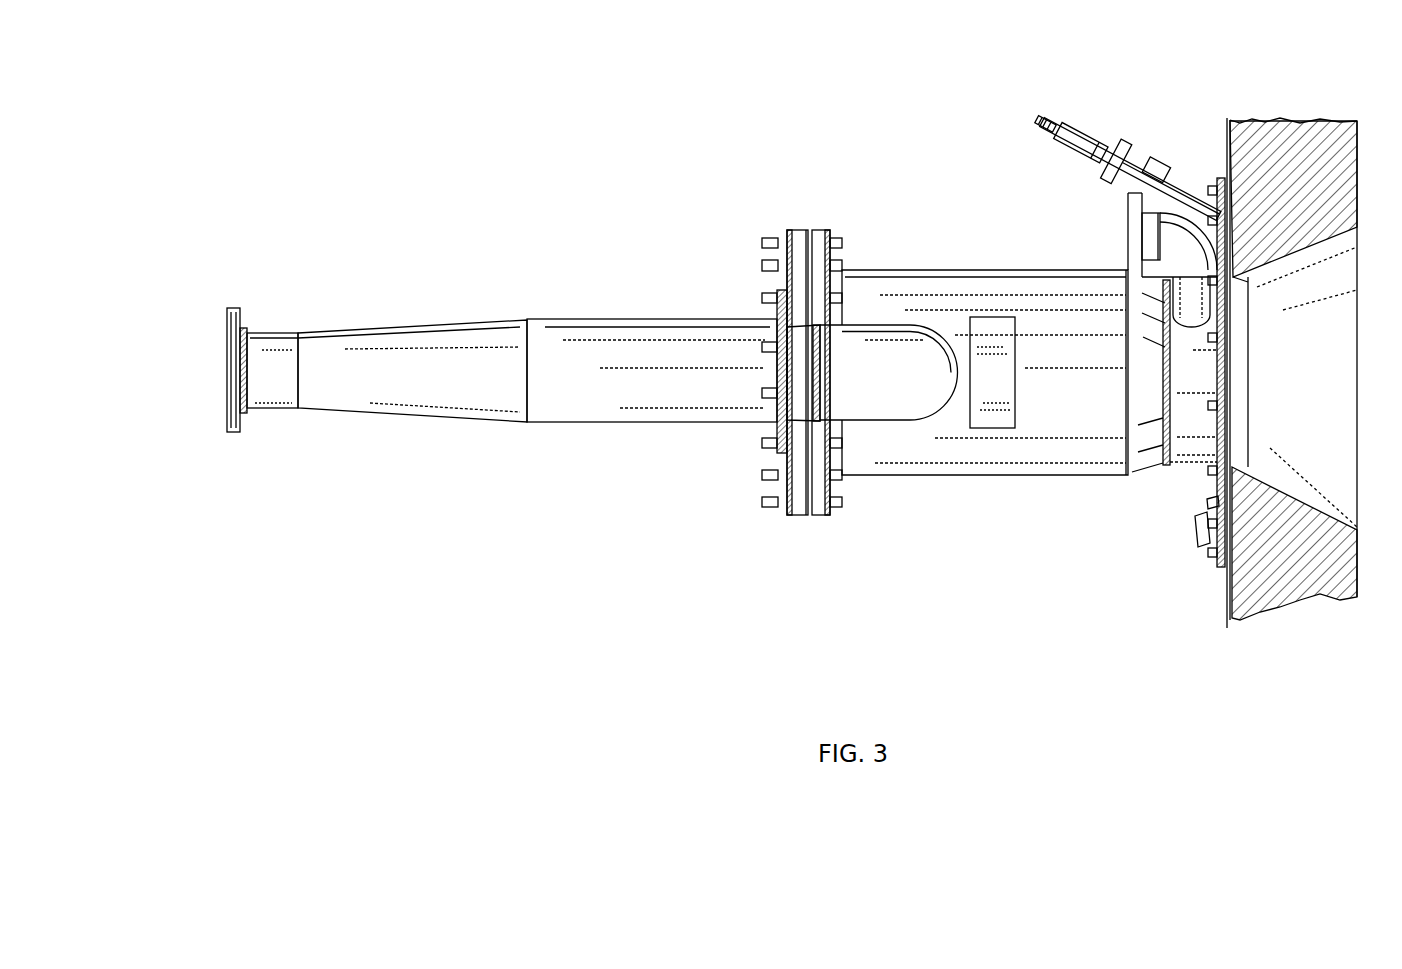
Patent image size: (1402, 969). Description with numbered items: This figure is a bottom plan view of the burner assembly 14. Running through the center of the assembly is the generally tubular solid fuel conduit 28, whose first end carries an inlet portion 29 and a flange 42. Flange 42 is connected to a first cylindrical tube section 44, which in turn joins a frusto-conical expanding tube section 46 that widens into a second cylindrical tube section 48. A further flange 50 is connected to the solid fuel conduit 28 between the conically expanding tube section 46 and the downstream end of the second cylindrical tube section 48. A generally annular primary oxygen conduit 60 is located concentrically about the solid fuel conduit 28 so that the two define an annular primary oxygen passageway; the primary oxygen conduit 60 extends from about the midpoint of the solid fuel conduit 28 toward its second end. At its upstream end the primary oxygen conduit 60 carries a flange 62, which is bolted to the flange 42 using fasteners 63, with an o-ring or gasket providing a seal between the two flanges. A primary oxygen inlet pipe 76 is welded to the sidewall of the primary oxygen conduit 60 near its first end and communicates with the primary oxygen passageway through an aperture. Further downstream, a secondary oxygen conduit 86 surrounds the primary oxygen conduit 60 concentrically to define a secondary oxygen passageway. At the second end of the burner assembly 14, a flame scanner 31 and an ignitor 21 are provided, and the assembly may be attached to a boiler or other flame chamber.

The burner assembly 14 is at (560, 218).
The ignitor 21 is at (1078, 130).
The solid fuel conduit 28 is at (512, 377).
The inlet portion 29 is at (205, 380).
The flame scanner 31 is at (1190, 548).
The flange 42 is at (234, 306).
The first cylindrical tube section 44 is at (267, 333).
The frusto-conical expanding tube section 46 is at (430, 327).
The second cylindrical tube section 48 is at (621, 320).
The flange 50 is at (800, 229).
The primary oxygen conduit 60 is at (1016, 476).
The flange 62 is at (826, 229).
The fasteners 63 is at (768, 504).
The primary oxygen inlet pipe 76 is at (852, 335).
The secondary oxygen conduit 86 is at (1176, 487).